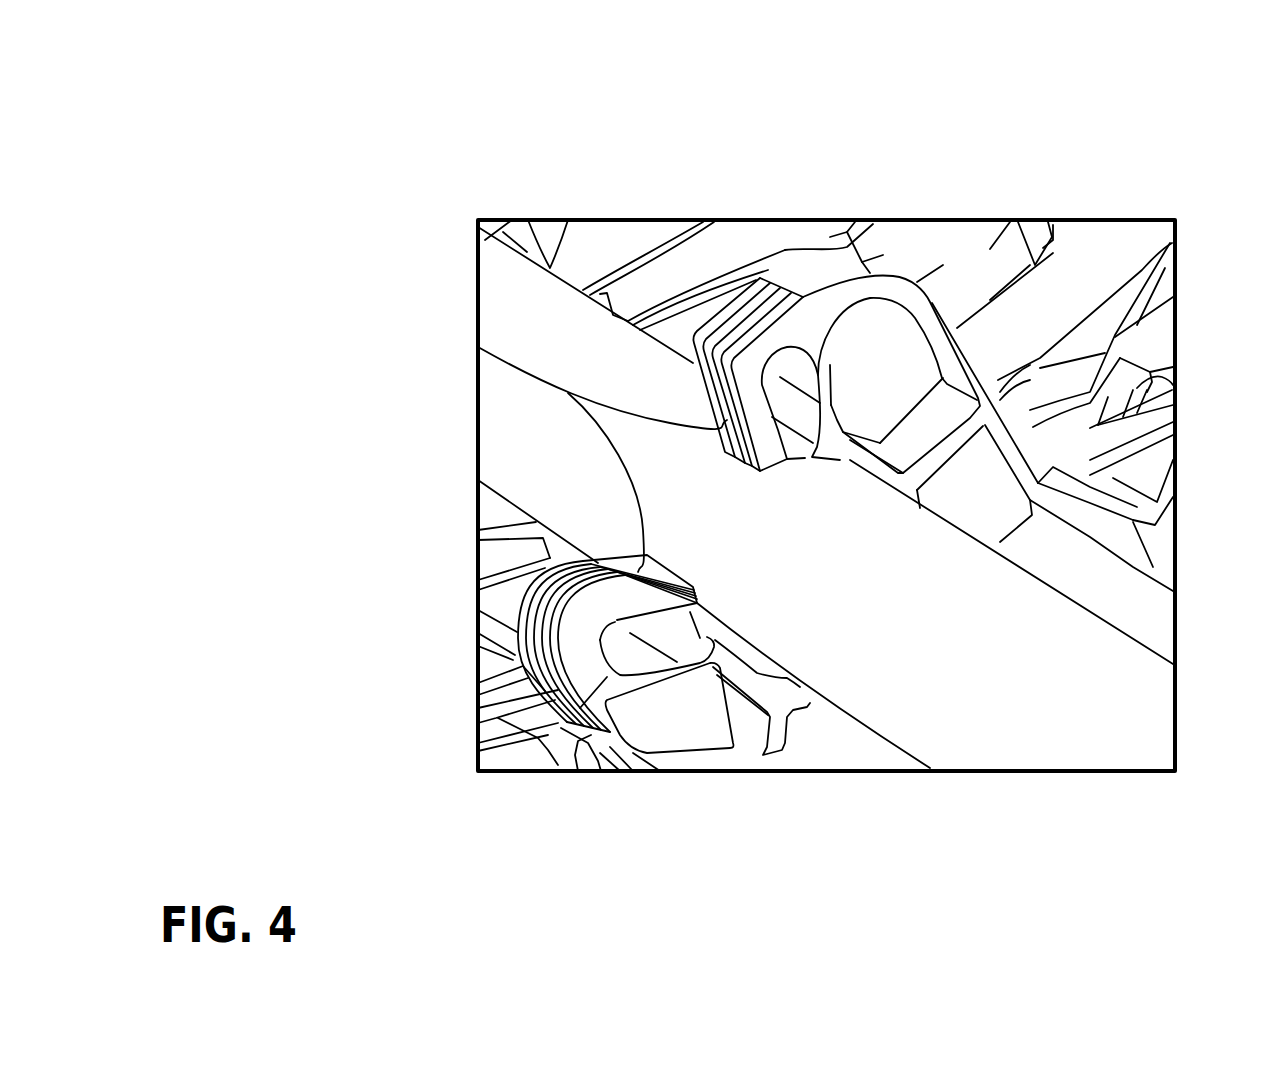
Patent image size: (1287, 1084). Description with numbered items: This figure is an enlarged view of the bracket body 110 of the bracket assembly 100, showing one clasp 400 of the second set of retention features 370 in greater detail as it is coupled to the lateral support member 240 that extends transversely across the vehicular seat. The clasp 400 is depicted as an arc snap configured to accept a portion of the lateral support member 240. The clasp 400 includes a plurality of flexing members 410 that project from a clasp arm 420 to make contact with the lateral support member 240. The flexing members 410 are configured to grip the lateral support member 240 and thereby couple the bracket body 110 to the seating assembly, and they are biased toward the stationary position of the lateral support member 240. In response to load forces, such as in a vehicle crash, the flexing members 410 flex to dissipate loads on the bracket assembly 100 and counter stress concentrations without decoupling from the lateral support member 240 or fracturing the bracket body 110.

The bracket assembly 100 is at (1100, 148).
The bracket body 110 is at (1107, 245).
The lateral support member 240 is at (953, 673).
The second set of retention features 370 is at (746, 268).
The clasp 400 is at (800, 328).
The flexing members 410 is at (568, 393).
The clasp arm 420 is at (580, 690).